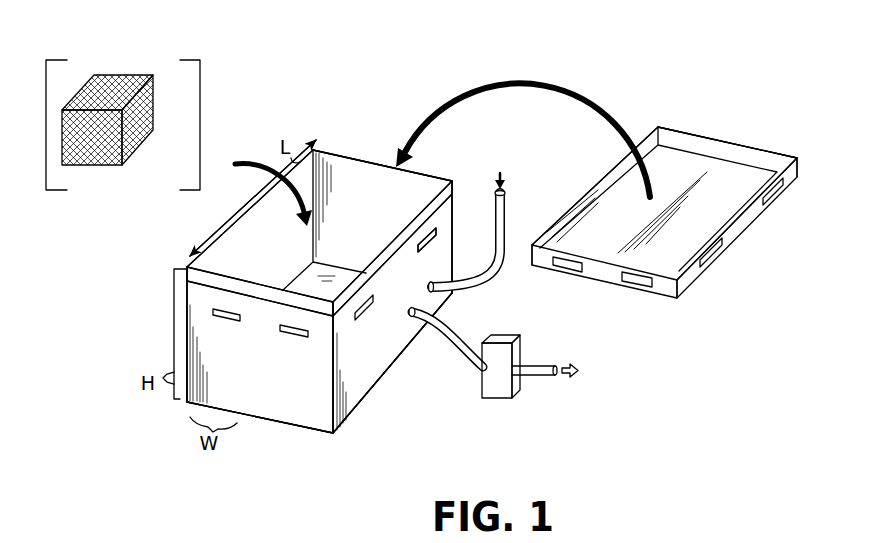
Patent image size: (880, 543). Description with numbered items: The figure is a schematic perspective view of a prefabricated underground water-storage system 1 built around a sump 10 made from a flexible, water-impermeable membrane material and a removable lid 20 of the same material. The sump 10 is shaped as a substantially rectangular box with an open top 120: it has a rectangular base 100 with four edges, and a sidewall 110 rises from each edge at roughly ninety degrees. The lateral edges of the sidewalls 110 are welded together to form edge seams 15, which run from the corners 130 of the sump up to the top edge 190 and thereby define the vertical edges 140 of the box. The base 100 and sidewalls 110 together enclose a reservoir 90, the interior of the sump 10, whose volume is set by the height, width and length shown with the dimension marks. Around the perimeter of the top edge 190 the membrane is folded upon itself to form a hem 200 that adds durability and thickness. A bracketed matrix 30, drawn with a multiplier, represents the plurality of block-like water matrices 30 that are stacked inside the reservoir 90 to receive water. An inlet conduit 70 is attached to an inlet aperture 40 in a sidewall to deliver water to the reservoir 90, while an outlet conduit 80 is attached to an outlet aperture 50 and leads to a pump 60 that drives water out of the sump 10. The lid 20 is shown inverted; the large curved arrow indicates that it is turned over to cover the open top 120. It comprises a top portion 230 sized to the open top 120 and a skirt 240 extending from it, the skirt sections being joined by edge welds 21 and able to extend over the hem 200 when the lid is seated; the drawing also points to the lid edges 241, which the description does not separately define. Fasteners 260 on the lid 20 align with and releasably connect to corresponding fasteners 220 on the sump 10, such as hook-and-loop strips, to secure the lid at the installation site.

The underground water-storage system 1 is at (709, 57).
The sump 10 is at (185, 356).
The edge seams 15 is at (453, 222).
The removable lid 20 is at (716, 220).
The edge welds 21 is at (799, 165).
The matrices 30 is at (83, 167).
The inlet port/aperture 40 is at (438, 268).
The outlet port/aperture 50 is at (404, 326).
The pump 60 is at (501, 390).
The inlet conduit 70 is at (506, 197).
The outlet conduit 80 is at (467, 370).
The reservoir 90 is at (350, 236).
The base 100 is at (203, 262).
The sidewalls 110 is at (423, 188).
The open top 120 is at (325, 136).
The corners/vertexes 130 is at (182, 410).
The edges 140 is at (185, 393).
The top edge 190 is at (370, 158).
The hem 200 is at (455, 191).
The fasteners 220 is at (232, 321).
The top portion 230 is at (755, 176).
The skirt 240 is at (723, 148).
The lid top edge 241 is at (574, 184).
The fasteners 260 is at (575, 268).